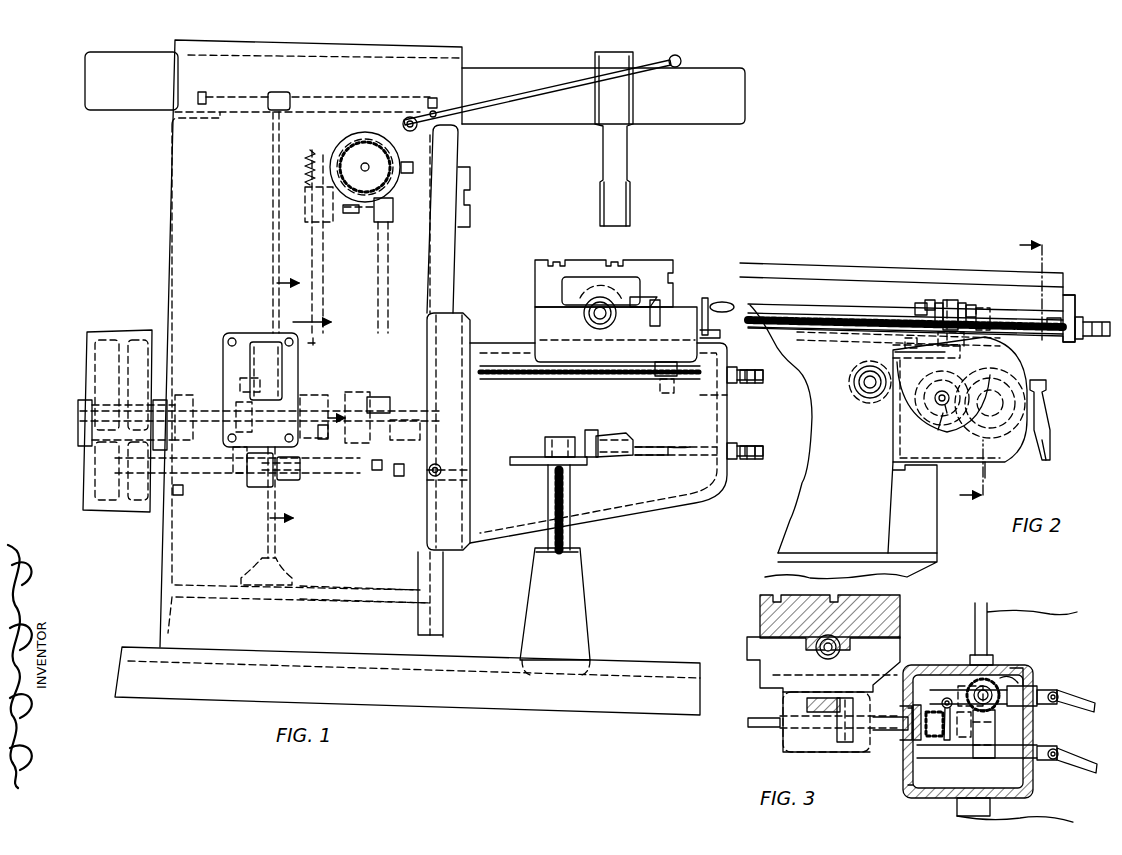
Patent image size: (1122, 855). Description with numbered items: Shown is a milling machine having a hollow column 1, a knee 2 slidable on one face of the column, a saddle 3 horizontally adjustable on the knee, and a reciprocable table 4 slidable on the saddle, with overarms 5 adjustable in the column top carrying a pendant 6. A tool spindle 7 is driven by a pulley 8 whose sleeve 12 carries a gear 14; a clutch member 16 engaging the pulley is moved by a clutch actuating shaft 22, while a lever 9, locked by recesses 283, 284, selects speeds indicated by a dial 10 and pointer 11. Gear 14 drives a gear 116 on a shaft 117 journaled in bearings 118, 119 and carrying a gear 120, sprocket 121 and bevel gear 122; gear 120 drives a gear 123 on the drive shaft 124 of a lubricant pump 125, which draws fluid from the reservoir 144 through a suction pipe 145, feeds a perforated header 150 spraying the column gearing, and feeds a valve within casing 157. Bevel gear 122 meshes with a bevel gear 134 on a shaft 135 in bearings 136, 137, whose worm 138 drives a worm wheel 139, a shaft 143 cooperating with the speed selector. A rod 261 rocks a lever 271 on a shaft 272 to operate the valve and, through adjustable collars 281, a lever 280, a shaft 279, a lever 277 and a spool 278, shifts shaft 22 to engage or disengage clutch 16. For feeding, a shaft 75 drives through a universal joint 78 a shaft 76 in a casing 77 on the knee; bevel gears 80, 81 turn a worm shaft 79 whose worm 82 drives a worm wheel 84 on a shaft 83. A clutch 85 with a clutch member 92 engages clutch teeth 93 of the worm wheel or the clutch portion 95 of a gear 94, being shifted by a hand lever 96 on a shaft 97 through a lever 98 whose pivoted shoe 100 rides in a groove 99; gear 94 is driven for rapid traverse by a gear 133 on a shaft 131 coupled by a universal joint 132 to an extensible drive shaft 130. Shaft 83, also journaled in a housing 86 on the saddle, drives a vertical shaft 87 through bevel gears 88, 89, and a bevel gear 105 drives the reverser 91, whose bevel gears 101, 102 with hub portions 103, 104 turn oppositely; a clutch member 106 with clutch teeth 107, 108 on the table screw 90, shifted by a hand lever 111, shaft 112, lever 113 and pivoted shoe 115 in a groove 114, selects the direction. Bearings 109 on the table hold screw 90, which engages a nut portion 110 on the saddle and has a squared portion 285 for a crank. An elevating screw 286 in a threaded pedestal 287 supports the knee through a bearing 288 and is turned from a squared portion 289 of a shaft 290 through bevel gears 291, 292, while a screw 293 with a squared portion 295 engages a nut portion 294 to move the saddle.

In FIG. 1, the hollow column 1 is at (175, 172).
In FIG. 1, the knee 2 is at (693, 490).
In FIG. 1, the saddle 3 is at (535, 315).
In FIG. 2, the saddle 3 is at (996, 371).
In FIG. 1, the table 4 is at (550, 262).
In FIG. 2, the table 4 is at (780, 268).
In FIG. 1, the overarms 5 is at (738, 124).
In FIG. 1, the pendant 6 is at (621, 165).
In FIG. 1, the tool spindle 7 is at (470, 180).
In FIG. 1, the pulley 8 is at (112, 330).
In FIG. 1, the lever 9 is at (559, 87).
In FIG. 1, the dial 10 is at (400, 150).
In FIG. 1, the pointer 11 is at (404, 176).
In FIG. 1, the hub or sleeve 12 is at (291, 420).
In FIG. 1, the gear 14 is at (177, 393).
In FIG. 1, the clutch member 16 is at (93, 365).
In FIG. 1, the clutch actuating shaft 22 is at (138, 418).
In FIG. 3, the shaft 75 is at (1086, 710).
In FIG. 3, the shaft 76 is at (1037, 690).
In FIG. 2, the casing 77 is at (1050, 458).
In FIG. 3, the casing 77 is at (1022, 668).
In FIG. 3, the universal joint 78 is at (1060, 695).
In FIG. 3, the worm shaft 79 is at (992, 682).
In FIG. 3, the bevel gear 80 is at (1026, 684).
In FIG. 3, the bevel gear 81 is at (970, 686).
In FIG. 2, the worm 82 is at (907, 350).
In FIG. 3, the worm 82 is at (978, 665).
In FIG. 2, the shaft 83 is at (925, 417).
In FIG. 3, the shaft 83 is at (892, 731).
In FIG. 3, the worm wheel 84 is at (985, 760).
In FIG. 3, the clutch 85 is at (1000, 794).
In FIG. 3, the housing 86 is at (790, 728).
In FIG. 3, the vertical shaft 87 is at (800, 674).
In FIG. 3, the bevel gear 88 is at (806, 704).
In FIG. 3, the bevel gear 89 is at (845, 746).
In FIG. 2, the table screw 90 is at (1047, 336).
In FIG. 3, the table screw 90 is at (841, 652).
In FIG. 2, the reverser 91 is at (940, 300).
In FIG. 3, the clutch member 92 is at (930, 712).
In FIG. 3, the clutch teeth 93 is at (948, 698).
In FIG. 3, the gear 94 is at (905, 706).
In FIG. 3, the clutch portion 95 is at (923, 705).
In FIG. 2, the hand lever 96 is at (1048, 420).
In FIG. 2, the shaft 97 is at (978, 408).
In FIG. 2, the lever 98 is at (952, 405).
In FIG. 3, the lever 98 is at (960, 710).
In FIG. 3, the groove 99 is at (947, 742).
In FIG. 2, the pivoted shoe 100 is at (941, 432).
In FIG. 2, the bevel gear 101 is at (932, 303).
In FIG. 2, the bevel gear 102 is at (967, 303).
In FIG. 2, the hub portion 103 is at (913, 343).
In FIG. 2, the hub portion 104 is at (980, 308).
In FIG. 3, the bevel gear 105 is at (812, 650).
In FIG. 2, the clutch member 106 is at (953, 303).
In FIG. 2, the clutch teeth 107 is at (937, 303).
In FIG. 2, the clutch teeth 108 is at (960, 303).
In FIG. 1, the bearings 109 is at (562, 288).
In FIG. 2, the bearings 109 is at (1072, 303).
In FIG. 2, the nut portion 110 is at (830, 330).
In FIG. 1, the hand lever 111 is at (708, 320).
In FIG. 1, the shaft 112 is at (680, 312).
In FIG. 1, the lever 113 is at (633, 312).
In FIG. 2, the groove 114 is at (947, 303).
In FIG. 1, the pivoted shoe 115 is at (632, 296).
In FIG. 1, the gear 116 is at (185, 497).
In FIG. 1, the shaft 117 is at (205, 468).
In FIG. 1, the bearing 118 is at (163, 472).
In FIG. 1, the bearing 119 is at (260, 488).
In FIG. 1, the gear 120 is at (241, 474).
In FIG. 1, the sprocket 121 is at (284, 480).
In FIG. 1, the bevel gear 122 is at (300, 476).
In FIG. 1, the gear 123 is at (246, 385).
In FIG. 1, the drive shaft 124 is at (240, 410).
In FIG. 1, the lubricant pump 125 is at (262, 358).
In FIG. 3, the extensible drive shaft 130 is at (1088, 774).
In FIG. 2, the shaft 131 is at (992, 418).
In FIG. 3, the shaft 131 is at (1032, 775).
In FIG. 3, the universal joint 132 is at (1070, 754).
In FIG. 2, the gear 133 is at (992, 470).
In FIG. 3, the gear 133 is at (908, 777).
In FIG. 1, the bevel gear 134 is at (322, 453).
In FIG. 1, the shaft 135 is at (314, 343).
In FIG. 1, the bearing 136 is at (323, 436).
In FIG. 1, the bearing 137 is at (306, 190).
In FIG. 1, the worm 138 is at (314, 140).
In FIG. 1, the worm wheel 139 is at (358, 138).
In FIG. 1, the shaft 143 is at (366, 168).
In FIG. 1, the reservoir 144 is at (378, 590).
In FIG. 1, the suction pipe 145 is at (270, 542).
In FIG. 1, the perforated header 150 is at (344, 95).
In FIG. 1, the casing 157 is at (262, 352).
In FIG. 1, the rod 261 is at (390, 285).
In FIG. 1, the lever 271 is at (383, 403).
In FIG. 1, the shaft 272 is at (362, 378).
In FIG. 1, the lever 277 is at (426, 460).
In FIG. 1, the spool 278 is at (416, 408).
In FIG. 1, the shaft 279 is at (431, 475).
In FIG. 1, the lever 280 is at (398, 478).
In FIG. 1, the adjustable collars 281 is at (374, 470).
In FIG. 1, the recess 283 is at (442, 92).
In FIG. 1, the recess 284 is at (436, 107).
In FIG. 1, the squared portion 285 is at (602, 296).
In FIG. 2, the squared portion 285 is at (1102, 333).
In FIG. 1, the elevating screw 286 is at (570, 530).
In FIG. 1, the threaded pedestal 287 is at (577, 578).
In FIG. 1, the bearing 288 is at (546, 437).
In FIG. 1, the squared portion 289 is at (778, 432).
In FIG. 2, the squared portion 289 is at (777, 428).
In FIG. 1, the shaft 290 is at (683, 450).
In FIG. 1, the bevel gear 291 is at (608, 438).
In FIG. 1, the bevel gear 292 is at (600, 418).
In FIG. 1, the screw 293 is at (572, 380).
In FIG. 1, the nut portion 294 is at (672, 386).
In FIG. 2, the nut portion 294 is at (885, 405).
In FIG. 1, the squared portion 295 is at (768, 380).
In FIG. 2, the squared portion 295 is at (775, 394).